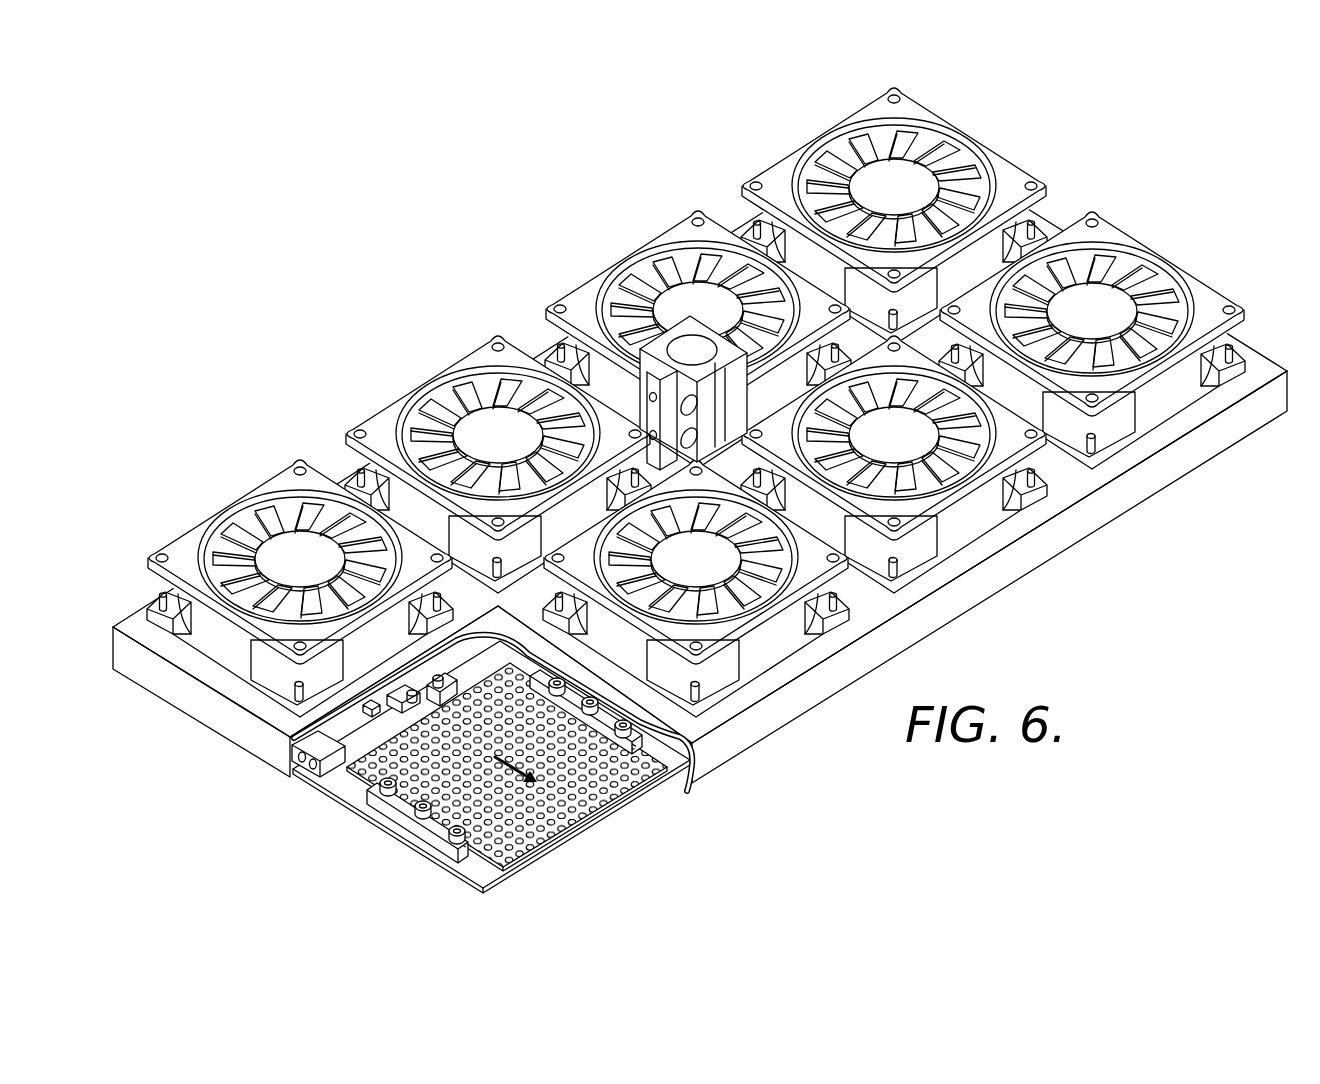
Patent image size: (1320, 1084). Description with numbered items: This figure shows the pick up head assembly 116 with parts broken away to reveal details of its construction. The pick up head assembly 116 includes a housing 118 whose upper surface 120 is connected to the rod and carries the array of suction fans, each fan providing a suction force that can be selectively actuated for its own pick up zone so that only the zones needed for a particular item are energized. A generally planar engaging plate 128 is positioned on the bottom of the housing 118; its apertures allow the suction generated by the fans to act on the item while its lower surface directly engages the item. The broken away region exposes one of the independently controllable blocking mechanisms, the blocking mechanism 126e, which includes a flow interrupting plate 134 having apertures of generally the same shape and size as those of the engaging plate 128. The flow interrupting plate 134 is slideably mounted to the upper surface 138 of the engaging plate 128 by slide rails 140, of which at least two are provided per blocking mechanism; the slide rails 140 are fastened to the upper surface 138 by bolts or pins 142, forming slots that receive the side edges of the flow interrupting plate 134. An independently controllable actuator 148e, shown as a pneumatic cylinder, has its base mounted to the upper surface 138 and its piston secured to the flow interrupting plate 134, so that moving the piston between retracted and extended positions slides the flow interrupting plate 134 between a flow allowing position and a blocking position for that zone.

The pick up head assembly 116 is at (700, 435).
The housing 118 is at (1078, 529).
The upper surface 120 is at (864, 606).
The blocking mechanism 126e is at (507, 764).
The engaging plate 128 is at (347, 806).
The flow interrupting plate 134 is at (548, 836).
The upper surface 138 is at (482, 873).
The slide rails 140 is at (433, 834).
The bolts or pins 142 is at (410, 814).
The actuator 148e is at (466, 668).